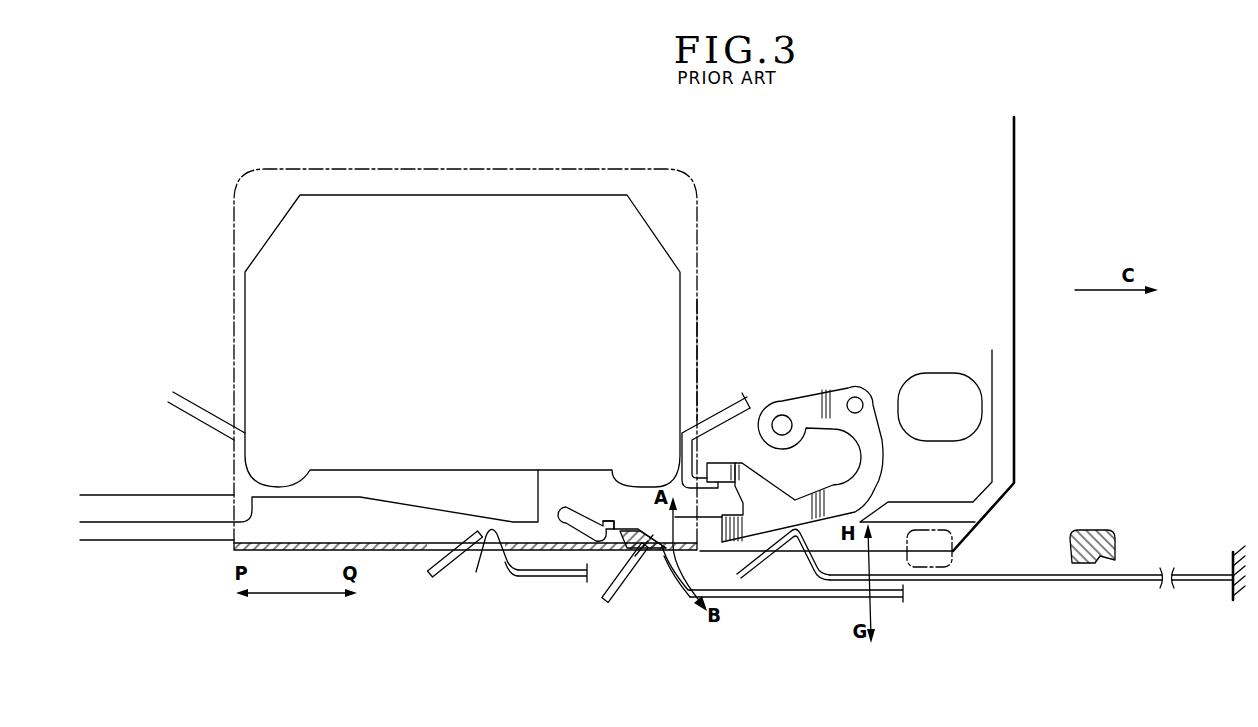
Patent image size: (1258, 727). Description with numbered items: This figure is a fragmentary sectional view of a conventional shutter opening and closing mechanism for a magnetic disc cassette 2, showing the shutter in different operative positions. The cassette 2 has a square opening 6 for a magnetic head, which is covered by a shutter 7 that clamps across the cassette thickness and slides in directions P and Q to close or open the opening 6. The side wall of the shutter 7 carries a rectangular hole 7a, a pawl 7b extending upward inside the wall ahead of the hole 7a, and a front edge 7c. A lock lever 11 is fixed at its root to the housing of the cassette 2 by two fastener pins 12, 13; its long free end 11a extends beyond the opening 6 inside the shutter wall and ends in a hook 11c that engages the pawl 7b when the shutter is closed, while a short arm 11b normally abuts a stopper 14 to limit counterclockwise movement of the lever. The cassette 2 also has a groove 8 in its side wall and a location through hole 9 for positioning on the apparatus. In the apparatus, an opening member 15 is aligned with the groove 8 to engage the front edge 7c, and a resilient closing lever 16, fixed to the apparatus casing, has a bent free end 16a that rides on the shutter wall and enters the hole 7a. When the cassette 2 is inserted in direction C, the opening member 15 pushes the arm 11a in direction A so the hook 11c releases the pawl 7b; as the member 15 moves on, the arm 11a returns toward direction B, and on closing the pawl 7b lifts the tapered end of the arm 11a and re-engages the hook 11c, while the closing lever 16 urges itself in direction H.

The magnetic disc cassette 2 is at (1017, 188).
The square opening 6 is at (577, 200).
The shutter 7 is at (667, 190).
The rectangular hole 7a is at (428, 548).
The pawl 7b is at (623, 575).
The front edge 7c is at (699, 330).
The groove 8 is at (978, 528).
The location through hole 9 is at (948, 378).
The lock lever 11 is at (800, 505).
The free end 11a is at (604, 526).
The arm 11b is at (715, 470).
The hook 11c is at (623, 527).
The fastener pin 12 is at (782, 414).
The fastener pin 13 is at (857, 396).
The stopper 14 is at (708, 485).
The opening member 15 is at (1097, 530).
The closing lever 16 is at (540, 578).
The free end 16a is at (483, 560).